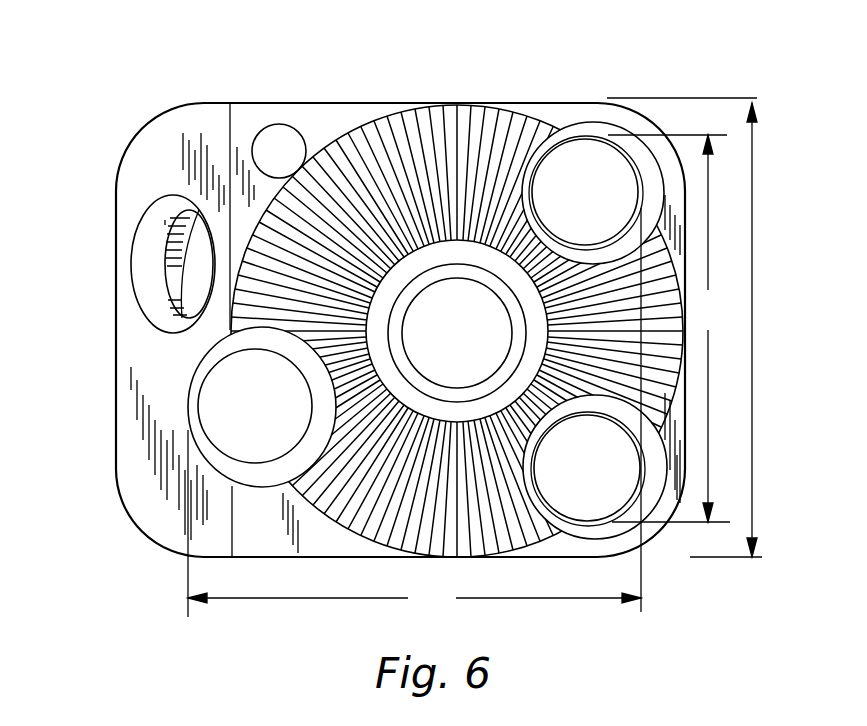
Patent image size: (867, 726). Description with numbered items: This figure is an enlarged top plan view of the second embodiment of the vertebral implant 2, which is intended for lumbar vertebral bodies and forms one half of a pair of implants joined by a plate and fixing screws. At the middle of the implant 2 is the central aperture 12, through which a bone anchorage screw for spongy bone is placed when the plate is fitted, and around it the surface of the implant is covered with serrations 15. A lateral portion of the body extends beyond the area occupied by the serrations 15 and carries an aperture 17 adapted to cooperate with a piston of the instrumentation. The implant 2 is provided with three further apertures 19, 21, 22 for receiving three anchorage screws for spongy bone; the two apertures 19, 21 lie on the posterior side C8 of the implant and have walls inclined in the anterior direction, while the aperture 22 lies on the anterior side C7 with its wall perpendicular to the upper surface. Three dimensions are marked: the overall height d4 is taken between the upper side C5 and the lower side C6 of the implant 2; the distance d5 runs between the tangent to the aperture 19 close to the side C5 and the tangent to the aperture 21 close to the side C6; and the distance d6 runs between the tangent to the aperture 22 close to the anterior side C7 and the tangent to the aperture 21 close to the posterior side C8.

The vertebral implant 2 is at (692, 187).
The central aperture 12 is at (469, 345).
The serrations 15 is at (367, 170).
The aperture 17 is at (147, 262).
The aperture 19 is at (589, 205).
The aperture 21 is at (598, 481).
The aperture 22 is at (257, 418).
The upper side C5 is at (524, 102).
The lower side C6 is at (262, 558).
The anterior side C7 is at (115, 398).
The posterior side C8 is at (685, 423).
The overall height of the implant d4 is at (686, 327).
The distance between aperture tangents d5 is at (669, 328).
The distance between aperture tangents d6 is at (414, 412).